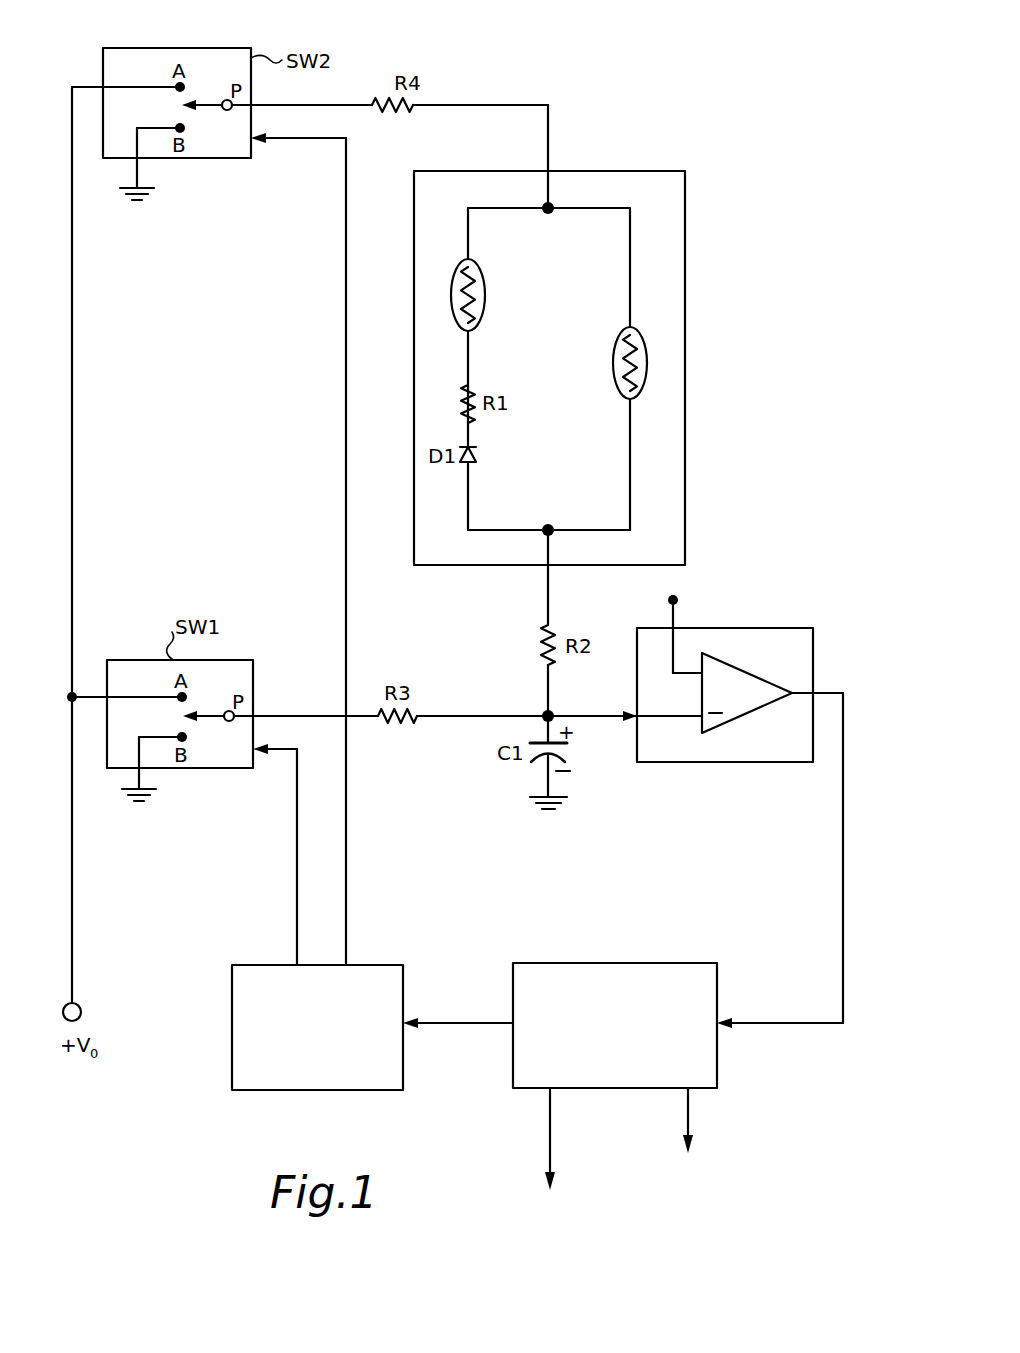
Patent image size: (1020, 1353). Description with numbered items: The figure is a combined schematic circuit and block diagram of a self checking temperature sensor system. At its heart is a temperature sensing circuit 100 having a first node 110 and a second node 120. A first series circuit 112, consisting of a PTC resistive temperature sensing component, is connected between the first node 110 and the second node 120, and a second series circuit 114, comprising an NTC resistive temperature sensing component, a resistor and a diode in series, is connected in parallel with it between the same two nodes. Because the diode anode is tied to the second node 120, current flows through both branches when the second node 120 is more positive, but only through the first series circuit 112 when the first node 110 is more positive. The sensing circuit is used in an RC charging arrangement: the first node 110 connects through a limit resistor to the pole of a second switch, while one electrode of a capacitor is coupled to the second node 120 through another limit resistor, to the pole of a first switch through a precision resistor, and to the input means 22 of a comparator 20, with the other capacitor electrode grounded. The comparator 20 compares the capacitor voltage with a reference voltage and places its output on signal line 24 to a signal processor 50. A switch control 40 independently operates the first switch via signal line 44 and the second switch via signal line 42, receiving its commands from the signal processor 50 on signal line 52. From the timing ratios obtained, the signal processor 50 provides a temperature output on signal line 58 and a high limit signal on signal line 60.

The comparator 20 is at (770, 628).
The input means 22 is at (630, 720).
The signal line 24 is at (843, 873).
The switch control 40 is at (297, 1090).
The signal line 42 is at (297, 858).
The signal line 44 is at (346, 207).
The signal processor 50 is at (532, 963).
The signal line 52 is at (462, 1023).
The signal line 58 is at (688, 1108).
The signal line 60 is at (550, 1118).
The temperature sensing circuit 100 is at (685, 268).
The first node 110 is at (552, 205).
The first series circuit 112 is at (600, 398).
The second series circuit 114 is at (520, 368).
The second node 120 is at (554, 534).